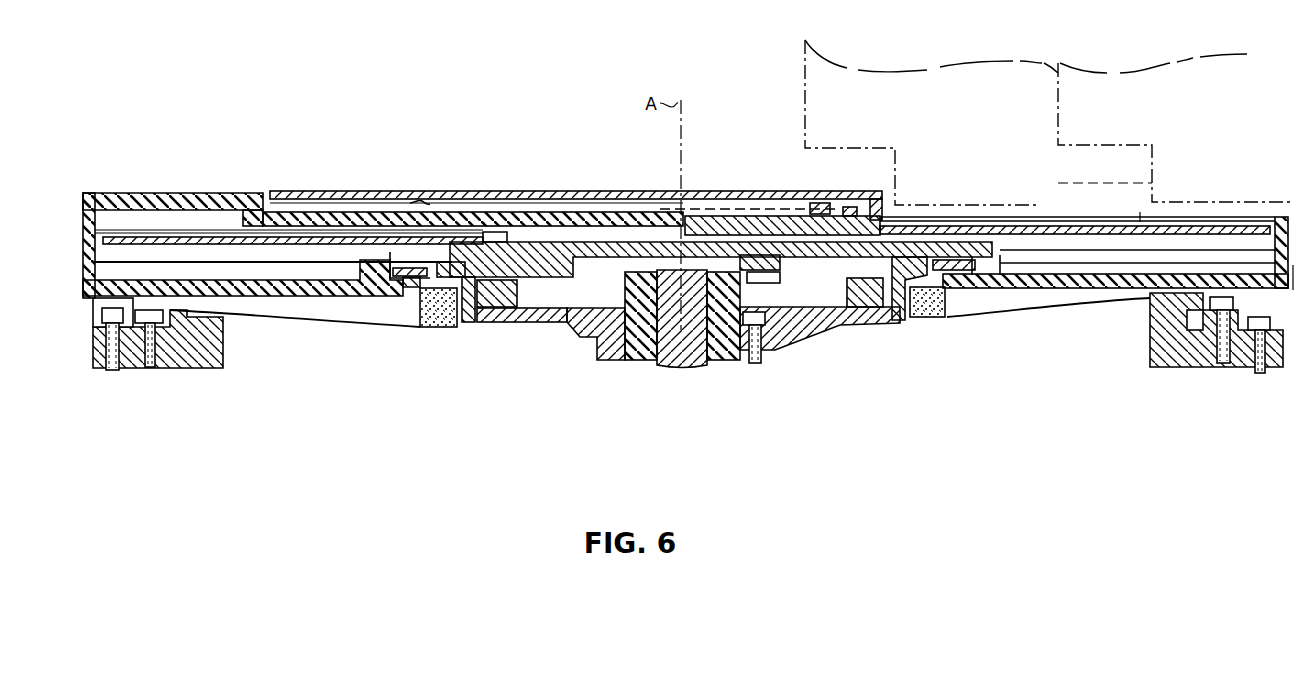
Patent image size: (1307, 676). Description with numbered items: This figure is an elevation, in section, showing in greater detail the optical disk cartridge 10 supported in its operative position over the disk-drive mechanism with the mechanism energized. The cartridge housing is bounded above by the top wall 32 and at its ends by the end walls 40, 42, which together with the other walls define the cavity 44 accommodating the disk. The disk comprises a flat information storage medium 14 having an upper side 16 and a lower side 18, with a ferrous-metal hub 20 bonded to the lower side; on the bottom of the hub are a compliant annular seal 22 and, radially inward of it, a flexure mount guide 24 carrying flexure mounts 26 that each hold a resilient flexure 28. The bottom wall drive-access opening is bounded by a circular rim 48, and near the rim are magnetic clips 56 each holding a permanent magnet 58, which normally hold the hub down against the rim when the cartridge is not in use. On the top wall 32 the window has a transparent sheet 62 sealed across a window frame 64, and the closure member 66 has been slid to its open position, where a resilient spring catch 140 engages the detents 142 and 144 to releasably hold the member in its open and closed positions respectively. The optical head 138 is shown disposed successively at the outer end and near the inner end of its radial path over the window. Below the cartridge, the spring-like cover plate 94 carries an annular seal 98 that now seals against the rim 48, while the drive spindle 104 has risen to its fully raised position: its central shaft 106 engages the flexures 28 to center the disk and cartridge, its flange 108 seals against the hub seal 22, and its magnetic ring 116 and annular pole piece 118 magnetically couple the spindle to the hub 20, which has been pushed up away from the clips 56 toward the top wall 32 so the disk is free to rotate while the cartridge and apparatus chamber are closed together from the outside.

The optical disk cartridge 10 is at (1296, 272).
The information storage medium 14 is at (153, 239).
The upper side 16 is at (207, 236).
The lower side 18 is at (233, 248).
The hub 20 is at (500, 257).
The annular seal 22 is at (447, 262).
The flexure mount guide 24 is at (740, 260).
The flexure mounts 26 is at (772, 271).
The flexures 28 is at (752, 277).
The top wall 32 is at (590, 218).
The end wall 40 is at (1273, 240).
The end wall 42 is at (83, 232).
The cavity 44 is at (165, 222).
The rim 48 is at (413, 293).
The magnetic clips 56 is at (400, 268).
The permanent magnet 58 is at (440, 268).
The sheet 62 is at (1140, 218).
The window frame 64 is at (850, 210).
The closure member 66 is at (752, 192).
The cover plate 94 is at (1070, 312).
The annular seal 98 is at (438, 327).
The drive spindle 104 is at (777, 323).
The central shaft 106 is at (627, 315).
The flange 108 is at (463, 323).
The magnetic ring 116 is at (505, 322).
The annular pole piece 118 is at (513, 290).
The optical head 138 is at (997, 168).
The spring catch 140 is at (730, 209).
The detent 142 is at (815, 207).
The detent 144 is at (420, 202).